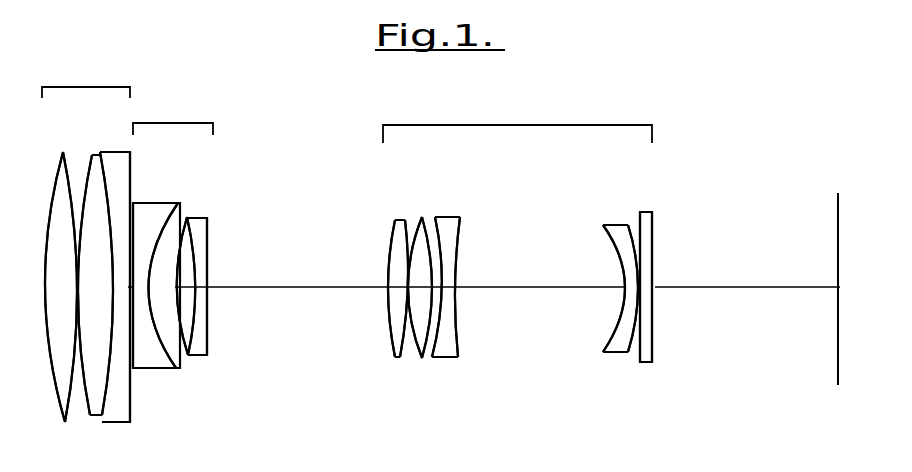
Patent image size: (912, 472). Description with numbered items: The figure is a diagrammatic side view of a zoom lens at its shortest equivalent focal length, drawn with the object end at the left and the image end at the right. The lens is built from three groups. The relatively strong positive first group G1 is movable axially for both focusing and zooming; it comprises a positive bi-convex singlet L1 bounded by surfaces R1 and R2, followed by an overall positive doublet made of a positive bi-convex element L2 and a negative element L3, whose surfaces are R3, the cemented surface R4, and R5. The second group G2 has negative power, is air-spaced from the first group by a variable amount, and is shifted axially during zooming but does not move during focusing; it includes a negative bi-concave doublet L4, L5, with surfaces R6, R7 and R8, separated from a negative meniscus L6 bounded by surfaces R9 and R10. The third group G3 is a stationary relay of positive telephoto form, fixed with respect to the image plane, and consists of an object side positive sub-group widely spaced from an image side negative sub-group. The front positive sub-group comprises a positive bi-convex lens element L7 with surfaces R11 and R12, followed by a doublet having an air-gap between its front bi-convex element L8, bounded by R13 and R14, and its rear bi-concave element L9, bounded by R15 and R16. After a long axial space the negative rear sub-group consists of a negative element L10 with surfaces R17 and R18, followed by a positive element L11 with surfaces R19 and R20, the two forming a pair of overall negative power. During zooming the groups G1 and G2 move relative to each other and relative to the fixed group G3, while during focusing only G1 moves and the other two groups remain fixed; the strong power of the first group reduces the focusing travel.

The first lens group G1 is at (86, 79).
The second lens group G2 is at (173, 116).
The third lens group G3 is at (517, 119).
The positive bi-convex lens element L1 is at (62, 183).
The positive bi-convex element L2 is at (92, 183).
The negative element L3 is at (115, 165).
The negative bi-concave doublet element L4 is at (163, 222).
The negative bi-concave doublet element L5 is at (186, 218).
The negative meniscus L6 is at (205, 243).
The positive bi-convex lens element L7 is at (395, 232).
The front bi-convex element L8 is at (422, 220).
The rear bi-concave element L9 is at (448, 245).
The negative element L10 is at (615, 233).
The positive element L11 is at (643, 238).
The lens surface radius R1 is at (63, 400).
The lens surface radius R2 is at (68, 393).
The lens surface radius R3 is at (88, 393).
The lens surface radius R4 is at (104, 398).
The lens surface radius R5 is at (131, 397).
The lens surface radius R6 is at (137, 348).
The lens surface radius R7 is at (169, 350).
The lens surface radius R8 is at (190, 333).
The lens surface radius R9 is at (198, 328).
The lens surface radius R10 is at (208, 320).
The lens surface radius R11 is at (392, 322).
The lens surface radius R12 is at (407, 330).
The lens surface radius R13 is at (416, 352).
The lens surface radius R14 is at (433, 340).
The lens surface radius R15 is at (443, 327).
The lens surface radius R16 is at (457, 320).
The lens surface radius R17 is at (625, 315).
The lens surface radius R18 is at (627, 342).
The lens surface radius R19 is at (637, 358).
The lens surface radius R20 is at (655, 343).